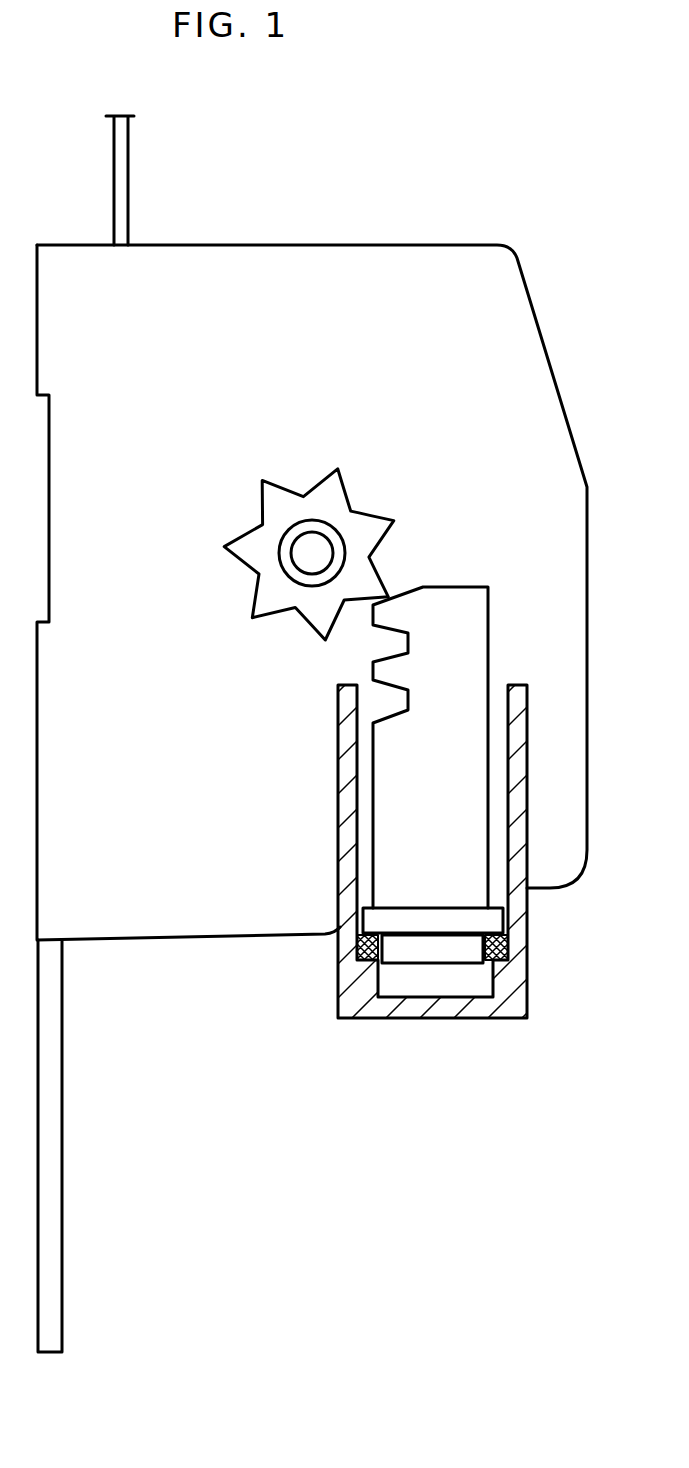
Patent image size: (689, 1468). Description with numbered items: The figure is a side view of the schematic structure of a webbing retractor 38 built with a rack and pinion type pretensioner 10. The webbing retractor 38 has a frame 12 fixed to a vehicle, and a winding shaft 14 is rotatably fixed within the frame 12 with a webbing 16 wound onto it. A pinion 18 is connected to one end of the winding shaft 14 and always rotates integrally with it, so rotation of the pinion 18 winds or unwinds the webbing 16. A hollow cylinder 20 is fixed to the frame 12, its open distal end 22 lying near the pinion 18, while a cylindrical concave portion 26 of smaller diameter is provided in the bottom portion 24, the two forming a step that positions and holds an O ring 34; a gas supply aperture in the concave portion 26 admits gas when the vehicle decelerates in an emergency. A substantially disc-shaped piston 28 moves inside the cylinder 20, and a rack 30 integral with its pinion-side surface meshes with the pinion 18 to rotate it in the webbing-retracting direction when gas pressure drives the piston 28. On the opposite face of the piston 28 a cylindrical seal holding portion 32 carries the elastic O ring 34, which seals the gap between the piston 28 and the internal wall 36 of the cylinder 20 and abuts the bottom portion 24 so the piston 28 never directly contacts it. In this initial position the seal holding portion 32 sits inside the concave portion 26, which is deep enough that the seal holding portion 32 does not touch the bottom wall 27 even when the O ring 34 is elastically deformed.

The pretensioner 10 is at (478, 536).
The frame 12 is at (472, 268).
The winding shaft 14 is at (320, 548).
The webbing 16 is at (128, 185).
The pinion 18 is at (276, 505).
The cylinder 20 is at (344, 853).
The distal end 22 is at (345, 695).
The bottom portion 24 is at (497, 950).
The concave portion 26 is at (378, 982).
The bottom wall 27 is at (412, 985).
The piston 28 is at (493, 922).
The rack 30 is at (472, 636).
The seal holding portion 32 is at (455, 955).
The O ring 34 is at (357, 957).
The internal wall 36 is at (514, 800).
The webbing retractor 38 is at (330, 156).